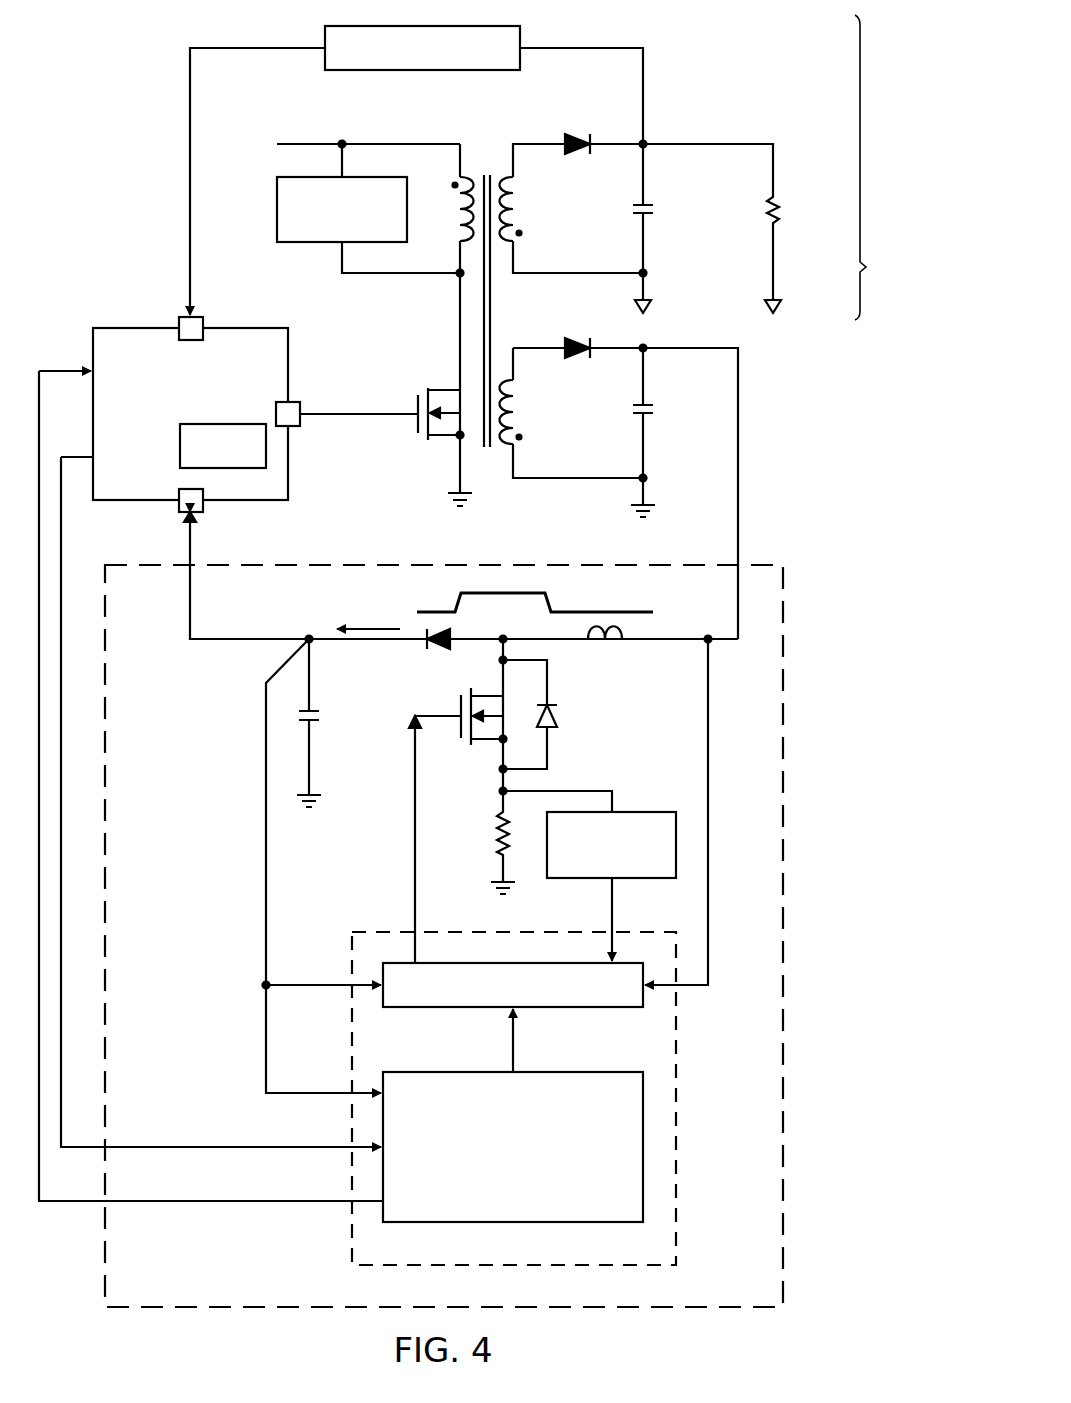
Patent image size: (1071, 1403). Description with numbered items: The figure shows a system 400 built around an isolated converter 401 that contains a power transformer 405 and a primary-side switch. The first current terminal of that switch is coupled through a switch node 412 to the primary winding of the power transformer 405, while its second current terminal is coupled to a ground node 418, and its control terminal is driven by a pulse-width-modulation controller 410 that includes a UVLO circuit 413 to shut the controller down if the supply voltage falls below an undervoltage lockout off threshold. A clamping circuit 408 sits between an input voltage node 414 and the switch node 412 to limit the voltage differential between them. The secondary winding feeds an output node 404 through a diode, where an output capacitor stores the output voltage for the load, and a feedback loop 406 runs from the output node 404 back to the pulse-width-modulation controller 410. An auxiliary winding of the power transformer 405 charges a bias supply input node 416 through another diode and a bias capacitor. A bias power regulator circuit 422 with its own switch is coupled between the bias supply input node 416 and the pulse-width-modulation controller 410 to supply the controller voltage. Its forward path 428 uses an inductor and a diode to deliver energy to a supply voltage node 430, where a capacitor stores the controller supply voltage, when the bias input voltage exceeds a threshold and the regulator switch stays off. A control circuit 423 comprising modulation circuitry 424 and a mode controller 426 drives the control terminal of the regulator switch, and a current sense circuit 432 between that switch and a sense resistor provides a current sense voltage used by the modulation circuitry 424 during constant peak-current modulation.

The system 400 is at (112, 52).
The isolated converter 401 is at (887, 167).
The output node 404 is at (650, 140).
The power transformer 405 is at (494, 160).
The feedback loop 406 is at (416, 72).
The clamping circuit 408 is at (275, 204).
The PWM controller 410 is at (148, 327).
The switch node 412 is at (452, 283).
The UVLO circuit 413 is at (178, 447).
The VIN node 414 is at (340, 140).
The VBIN node 416 is at (638, 355).
The ground node 418 is at (455, 497).
The bias power regulator circuit 422 is at (312, 1312).
The control circuit 423 is at (688, 1142).
The modulation circuitry 424 is at (483, 1008).
The mode controller 426 is at (545, 1072).
The forward path 428 is at (368, 625).
The VVDD node 430 is at (306, 632).
The current sense circuit 432 is at (632, 810).